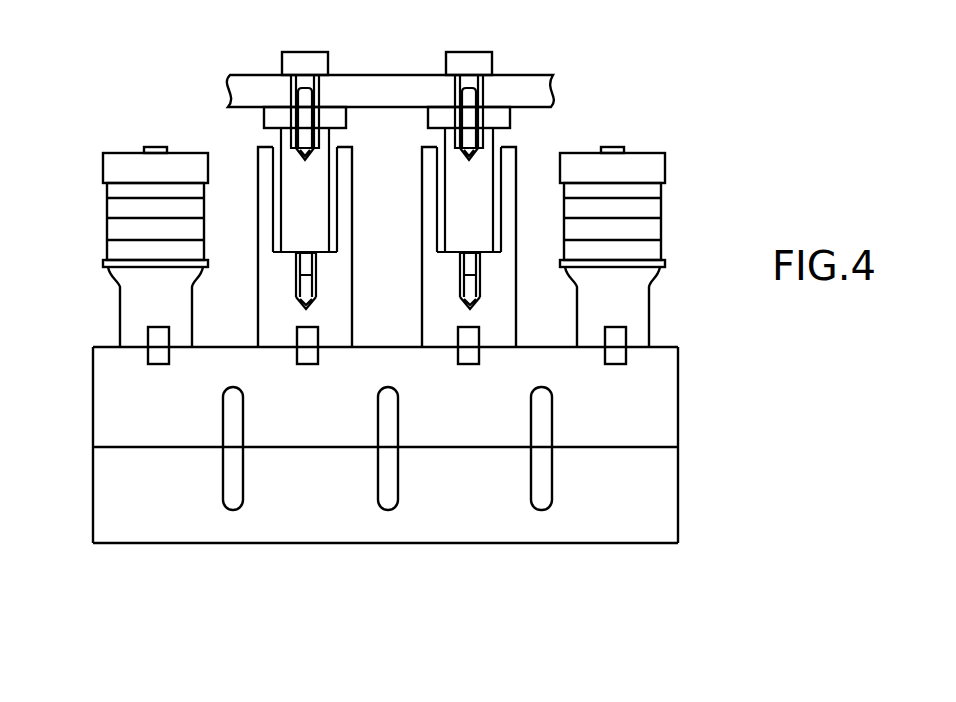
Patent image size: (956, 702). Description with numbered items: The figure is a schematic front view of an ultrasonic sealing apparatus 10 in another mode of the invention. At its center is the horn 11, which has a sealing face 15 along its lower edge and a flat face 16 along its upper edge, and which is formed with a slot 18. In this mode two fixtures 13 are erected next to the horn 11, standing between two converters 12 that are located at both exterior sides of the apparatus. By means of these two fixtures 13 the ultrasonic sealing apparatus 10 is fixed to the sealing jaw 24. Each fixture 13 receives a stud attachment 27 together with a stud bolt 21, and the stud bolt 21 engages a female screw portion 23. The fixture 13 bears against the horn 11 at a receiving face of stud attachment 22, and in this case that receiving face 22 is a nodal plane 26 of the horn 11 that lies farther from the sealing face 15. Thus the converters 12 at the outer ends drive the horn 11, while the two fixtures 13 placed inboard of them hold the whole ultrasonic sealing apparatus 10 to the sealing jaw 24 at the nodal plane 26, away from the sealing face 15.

The ultrasonic sealing apparatus 10 is at (648, 122).
The horn 11 is at (693, 404).
The converter 12 is at (663, 196).
The fixture 13 is at (257, 215).
The sealing face 15 is at (310, 544).
The flat face 16 is at (663, 345).
The slot 18 is at (543, 511).
The stud bolt 21 is at (148, 353).
The receiving face of stud attachment 22 is at (452, 250).
The female screw portion 23 is at (296, 278).
The sealing jaw 24 is at (387, 75).
The nodal plane 26 is at (488, 262).
The stud attachment 27 is at (493, 187).